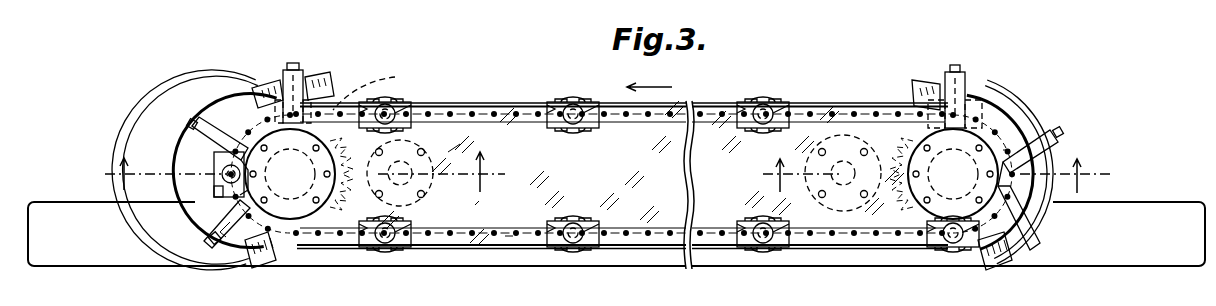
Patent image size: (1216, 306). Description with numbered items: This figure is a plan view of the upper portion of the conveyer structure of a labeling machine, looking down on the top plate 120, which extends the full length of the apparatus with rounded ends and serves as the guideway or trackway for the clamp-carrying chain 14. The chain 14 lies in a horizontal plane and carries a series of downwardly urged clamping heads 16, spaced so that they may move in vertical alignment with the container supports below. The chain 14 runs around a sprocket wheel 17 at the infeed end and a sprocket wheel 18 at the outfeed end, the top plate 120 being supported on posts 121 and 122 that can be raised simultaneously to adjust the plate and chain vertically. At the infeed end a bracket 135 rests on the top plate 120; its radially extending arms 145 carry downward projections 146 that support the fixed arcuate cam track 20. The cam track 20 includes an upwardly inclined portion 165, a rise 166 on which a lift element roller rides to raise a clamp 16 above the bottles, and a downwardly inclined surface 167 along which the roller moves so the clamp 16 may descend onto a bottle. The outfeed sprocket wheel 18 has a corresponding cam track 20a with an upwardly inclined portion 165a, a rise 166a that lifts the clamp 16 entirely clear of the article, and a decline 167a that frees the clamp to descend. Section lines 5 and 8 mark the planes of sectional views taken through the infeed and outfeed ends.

The section line 5- 5 is at (306, 172).
The section line 8- 8 is at (936, 176).
The clamp-carrying chain 14 is at (511, 236).
The clamping heads 16 is at (583, 94).
The sprocket wheel 17 is at (360, 91).
The sprocket wheel 18 is at (897, 102).
The cam track 20 is at (208, 122).
The cam track 20a is at (1041, 124).
The top plate 120 is at (478, 205).
The post 121 is at (450, 150).
The post 122 is at (800, 150).
The bracket 135 is at (302, 214).
The radially extending arms 145 is at (287, 75).
The downward projections 146 is at (303, 72).
The upwardly inclined portion 165 is at (270, 93).
The upwardly inclined portion 165a is at (990, 264).
The rise 166 is at (208, 157).
The rise 166a is at (1000, 110).
The downwardly inclined surface 167 is at (266, 257).
The decline 167a is at (925, 92).